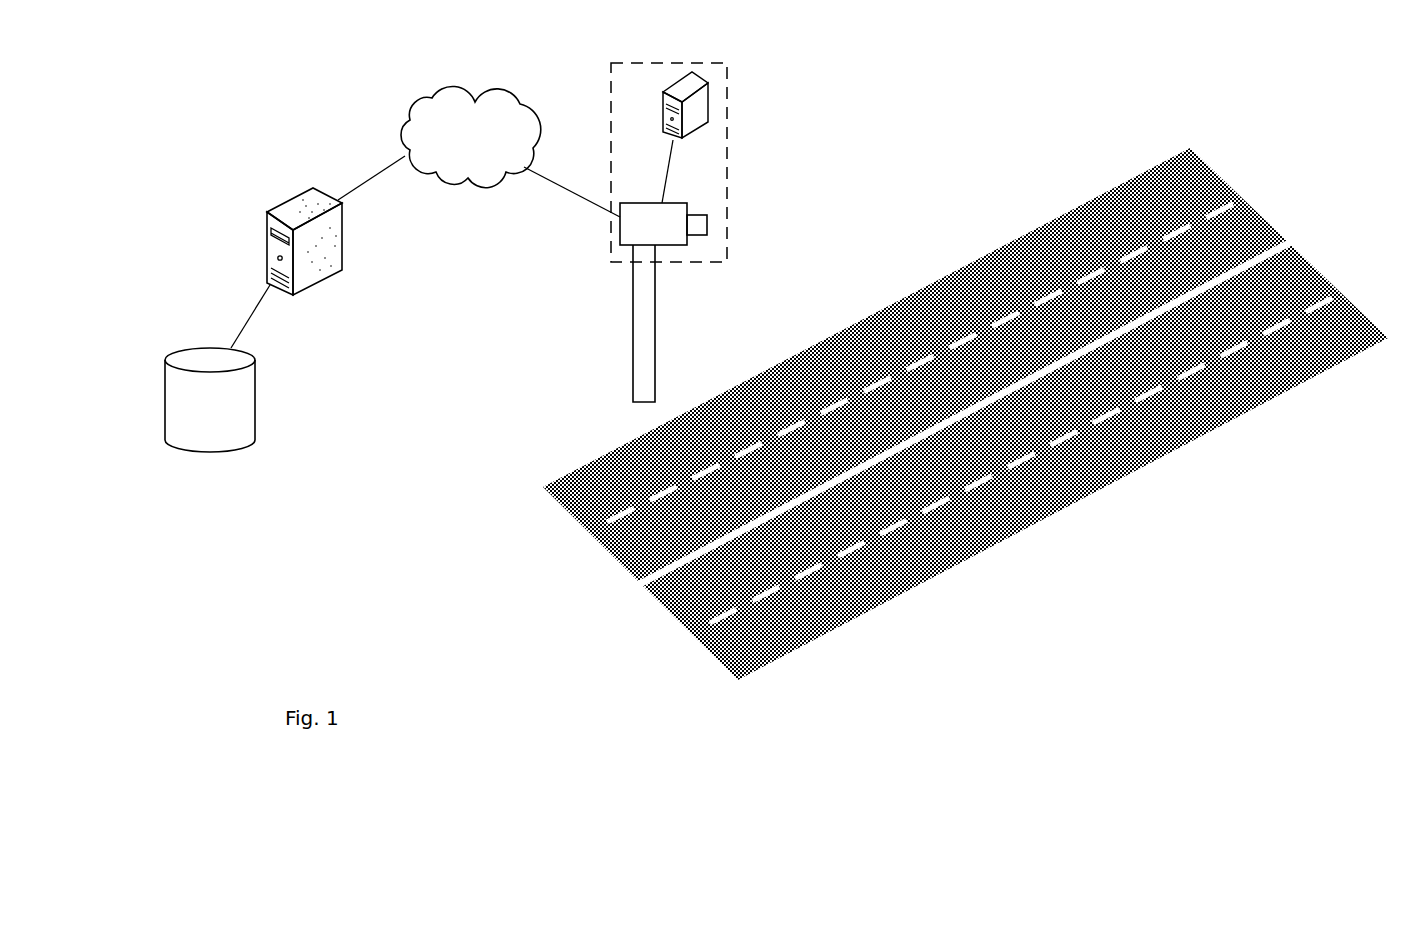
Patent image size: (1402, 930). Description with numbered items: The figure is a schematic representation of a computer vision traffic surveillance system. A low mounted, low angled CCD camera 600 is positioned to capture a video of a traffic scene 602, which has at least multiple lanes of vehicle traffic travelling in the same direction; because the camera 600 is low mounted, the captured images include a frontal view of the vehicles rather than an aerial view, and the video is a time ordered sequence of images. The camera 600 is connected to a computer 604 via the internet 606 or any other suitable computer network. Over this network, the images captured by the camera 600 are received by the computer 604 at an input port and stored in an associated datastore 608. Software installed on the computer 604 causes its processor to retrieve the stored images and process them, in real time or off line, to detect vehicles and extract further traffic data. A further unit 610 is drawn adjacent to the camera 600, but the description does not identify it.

The CCD camera 600 is at (673, 245).
The traffic scene 602 is at (1003, 511).
The computer 604 is at (283, 203).
The internet 606 is at (447, 88).
The datastore 608 is at (243, 450).
The local processor 610 is at (708, 98).